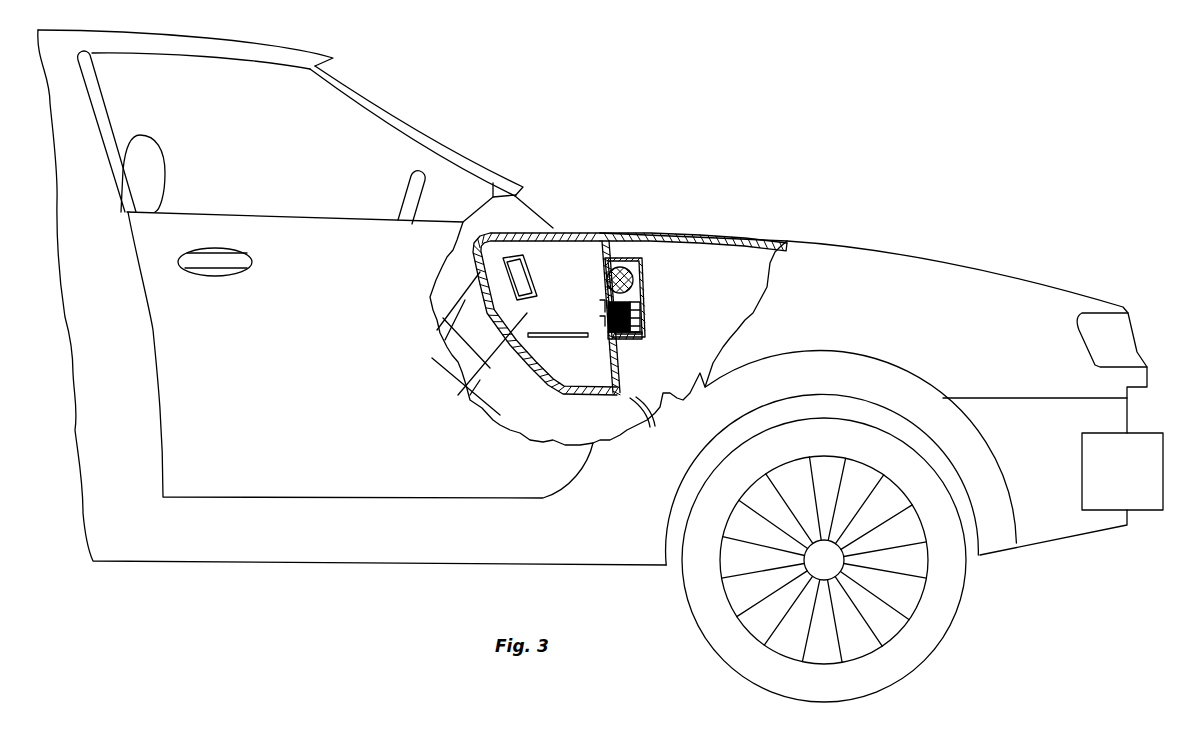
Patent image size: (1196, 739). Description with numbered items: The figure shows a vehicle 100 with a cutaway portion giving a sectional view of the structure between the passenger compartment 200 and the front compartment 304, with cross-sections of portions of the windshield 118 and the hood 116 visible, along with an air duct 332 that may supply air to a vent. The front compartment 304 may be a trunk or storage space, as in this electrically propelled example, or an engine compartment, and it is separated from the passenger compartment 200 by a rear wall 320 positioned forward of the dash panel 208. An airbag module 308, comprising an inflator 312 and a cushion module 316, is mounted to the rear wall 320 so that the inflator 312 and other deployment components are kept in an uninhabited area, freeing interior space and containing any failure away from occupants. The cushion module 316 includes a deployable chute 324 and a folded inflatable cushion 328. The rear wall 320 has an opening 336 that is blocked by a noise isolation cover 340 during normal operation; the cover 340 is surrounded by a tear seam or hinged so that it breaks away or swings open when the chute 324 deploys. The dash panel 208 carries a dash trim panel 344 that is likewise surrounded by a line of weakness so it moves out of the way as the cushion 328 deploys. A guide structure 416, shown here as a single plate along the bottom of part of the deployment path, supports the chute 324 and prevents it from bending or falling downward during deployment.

The vehicle 100 is at (1007, 167).
The hood 116 is at (723, 232).
The windshield 118 is at (498, 226).
The passenger compartment 200 is at (388, 145).
The dash panel 208 is at (470, 395).
The front compartment 304 is at (735, 268).
The airbag module 308 is at (630, 255).
The inflator 312 is at (634, 280).
The cushion module 316 is at (645, 333).
The rear wall 320 is at (617, 370).
The deployable chute 324 is at (619, 339).
The folded inflatable cushion 328 is at (633, 312).
The air duct 332 is at (540, 283).
The opening 336 is at (603, 308).
The noise isolation cover 340 is at (605, 320).
The dash trim panel 344 is at (450, 340).
The guide structure 416 is at (549, 338).